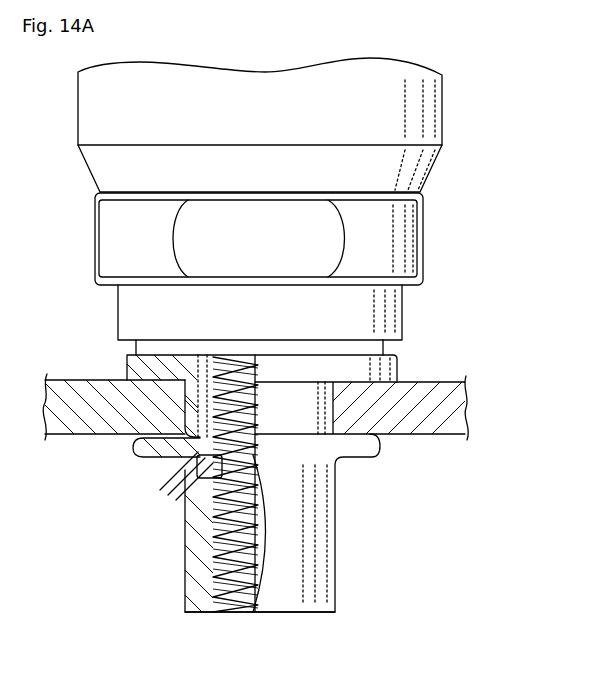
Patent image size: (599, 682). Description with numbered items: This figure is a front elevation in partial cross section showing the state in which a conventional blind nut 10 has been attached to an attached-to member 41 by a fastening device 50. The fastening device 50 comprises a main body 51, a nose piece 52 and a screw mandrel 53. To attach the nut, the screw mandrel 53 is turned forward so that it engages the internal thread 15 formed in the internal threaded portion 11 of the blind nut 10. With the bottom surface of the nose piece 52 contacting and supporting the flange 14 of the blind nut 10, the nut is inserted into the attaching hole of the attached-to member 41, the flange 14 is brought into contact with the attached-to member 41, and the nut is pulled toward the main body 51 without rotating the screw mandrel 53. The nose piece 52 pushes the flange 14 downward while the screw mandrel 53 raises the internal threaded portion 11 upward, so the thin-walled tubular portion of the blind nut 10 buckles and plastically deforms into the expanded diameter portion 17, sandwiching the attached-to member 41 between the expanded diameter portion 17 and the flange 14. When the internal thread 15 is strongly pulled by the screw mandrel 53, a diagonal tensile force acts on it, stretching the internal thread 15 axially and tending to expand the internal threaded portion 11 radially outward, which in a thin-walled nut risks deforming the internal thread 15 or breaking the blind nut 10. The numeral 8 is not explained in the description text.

The fastening device 50 is at (462, 125).
The main body 51 is at (423, 240).
The nose piece 52 is at (384, 346).
The flange 14 is at (398, 366).
The blind nut 10 is at (112, 362).
The expanded diameter portion 17 is at (135, 448).
The screw mandrel 53 is at (195, 463).
The nut body 8 is at (186, 523).
The internal threaded portion 11 is at (213, 570).
The internal thread 15 is at (232, 612).
The attached-to member 41 is at (437, 436).